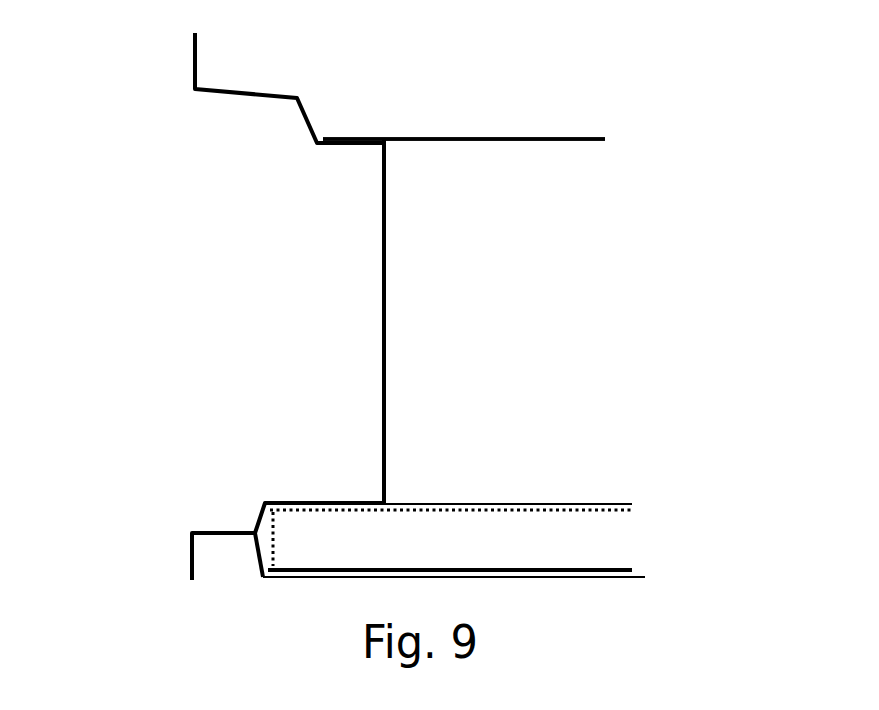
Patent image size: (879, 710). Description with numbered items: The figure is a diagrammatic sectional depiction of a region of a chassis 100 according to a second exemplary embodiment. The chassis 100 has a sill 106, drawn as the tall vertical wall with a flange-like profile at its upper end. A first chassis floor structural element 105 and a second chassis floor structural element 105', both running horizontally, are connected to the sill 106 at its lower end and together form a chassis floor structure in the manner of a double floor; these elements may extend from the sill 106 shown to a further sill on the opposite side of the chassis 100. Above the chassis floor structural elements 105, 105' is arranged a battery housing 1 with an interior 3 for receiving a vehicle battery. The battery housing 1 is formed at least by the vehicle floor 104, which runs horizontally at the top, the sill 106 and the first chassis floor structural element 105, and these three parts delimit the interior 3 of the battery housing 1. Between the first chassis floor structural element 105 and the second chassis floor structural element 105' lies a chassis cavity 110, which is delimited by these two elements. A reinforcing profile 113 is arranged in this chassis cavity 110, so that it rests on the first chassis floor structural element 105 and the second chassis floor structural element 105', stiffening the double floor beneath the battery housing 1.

The chassis 100 is at (150, 141).
The battery housing 1 is at (607, 136).
The interior 3 is at (555, 252).
The vehicle floor 104 is at (485, 139).
The first chassis floor structural element 105 is at (467, 507).
The second chassis floor structural element 105' is at (474, 604).
The sill 106 is at (382, 191).
The chassis cavity 110 is at (610, 534).
The reinforcing profile 113 is at (618, 570).